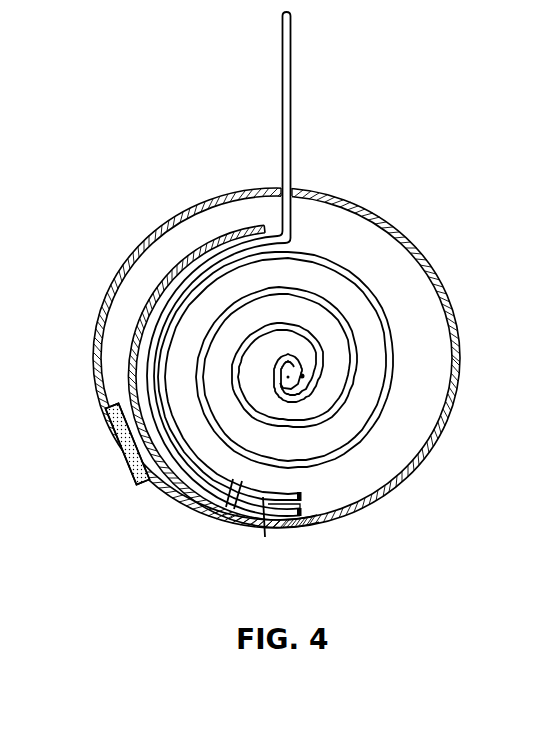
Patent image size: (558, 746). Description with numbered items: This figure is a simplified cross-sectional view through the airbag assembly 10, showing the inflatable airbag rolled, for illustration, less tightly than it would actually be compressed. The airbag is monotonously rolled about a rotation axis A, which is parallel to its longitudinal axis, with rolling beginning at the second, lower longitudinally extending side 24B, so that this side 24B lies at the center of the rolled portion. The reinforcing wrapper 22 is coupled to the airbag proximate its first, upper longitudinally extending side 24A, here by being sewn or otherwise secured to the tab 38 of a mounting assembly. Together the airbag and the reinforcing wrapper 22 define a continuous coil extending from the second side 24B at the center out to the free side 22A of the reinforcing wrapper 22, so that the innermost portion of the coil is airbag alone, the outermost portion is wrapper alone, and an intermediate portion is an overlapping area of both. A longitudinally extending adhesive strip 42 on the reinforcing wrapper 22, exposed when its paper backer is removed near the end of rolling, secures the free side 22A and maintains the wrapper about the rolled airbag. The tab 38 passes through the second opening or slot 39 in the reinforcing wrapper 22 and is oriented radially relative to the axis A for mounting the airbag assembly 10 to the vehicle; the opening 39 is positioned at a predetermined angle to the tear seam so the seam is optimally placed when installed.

The airbag assembly 10 is at (298, 294).
The reinforcing wrapper 22 is at (409, 228).
The free side of the reinforcing wrapper 22A is at (123, 474).
The first longitudinally extending side of the inflatable airbag 24A is at (301, 497).
The second longitudinally extending side of the inflatable airbag 24B is at (313, 381).
The tab 38 is at (282, 90).
The second opening or slot 39 is at (292, 183).
The adhesive strip 42 is at (148, 481).
The rotation axis A is at (307, 367).